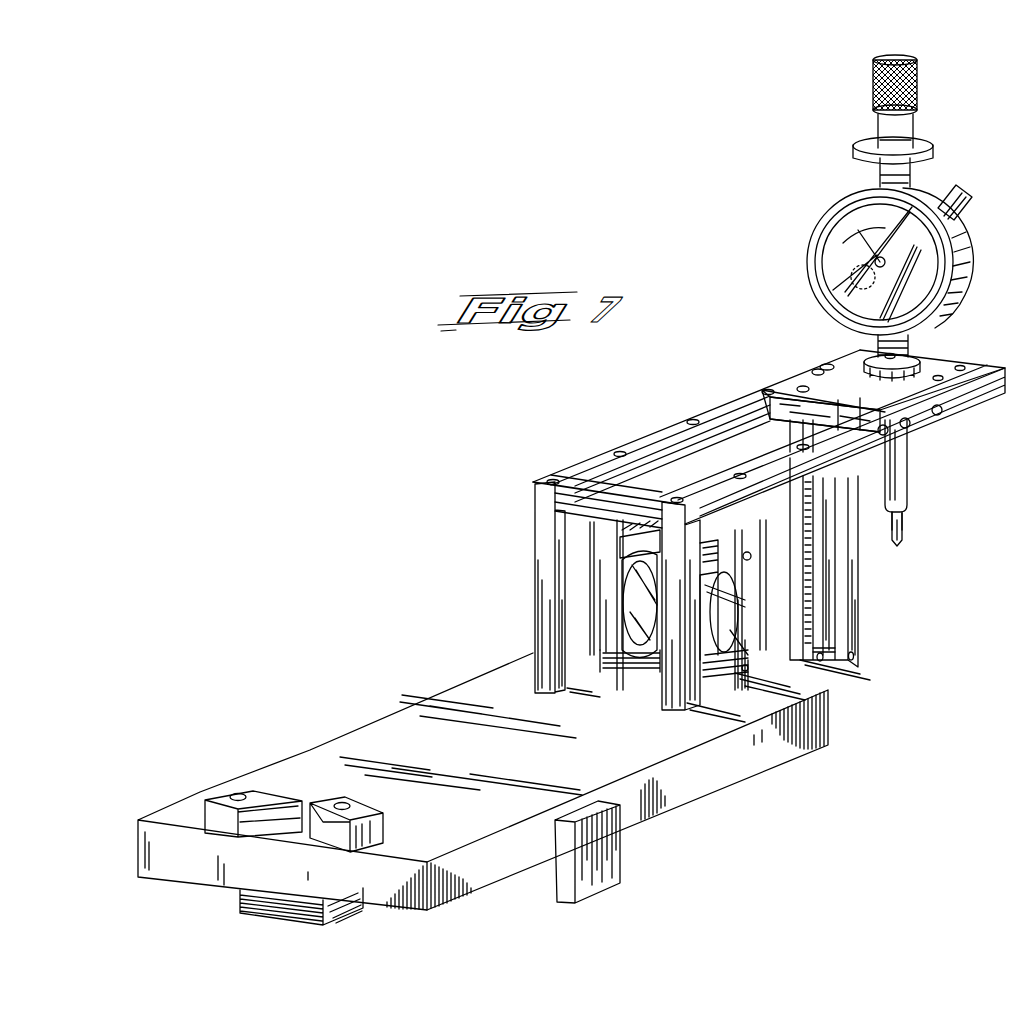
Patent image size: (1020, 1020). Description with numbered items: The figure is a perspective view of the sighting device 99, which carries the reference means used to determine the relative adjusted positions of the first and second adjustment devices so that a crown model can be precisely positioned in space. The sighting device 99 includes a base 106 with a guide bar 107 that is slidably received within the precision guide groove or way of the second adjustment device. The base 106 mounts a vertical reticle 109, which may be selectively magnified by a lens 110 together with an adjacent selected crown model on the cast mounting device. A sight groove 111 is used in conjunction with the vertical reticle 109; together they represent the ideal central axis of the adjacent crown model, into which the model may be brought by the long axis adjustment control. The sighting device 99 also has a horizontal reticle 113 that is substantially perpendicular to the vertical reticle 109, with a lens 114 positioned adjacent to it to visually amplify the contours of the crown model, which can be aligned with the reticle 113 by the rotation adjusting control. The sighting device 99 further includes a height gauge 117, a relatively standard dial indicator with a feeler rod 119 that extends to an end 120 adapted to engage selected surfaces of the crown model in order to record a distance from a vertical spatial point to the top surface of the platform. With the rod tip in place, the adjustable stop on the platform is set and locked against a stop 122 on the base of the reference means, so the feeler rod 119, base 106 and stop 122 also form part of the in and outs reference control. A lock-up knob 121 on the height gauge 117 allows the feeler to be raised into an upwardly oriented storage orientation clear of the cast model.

The sighting device 99 is at (729, 378).
The base 106 is at (688, 764).
The guide bar 107 is at (238, 903).
The vertical reticle 109 is at (832, 606).
The lens 110 is at (645, 593).
The sight groove 111 is at (300, 800).
The horizontal reticle 113 is at (817, 368).
The lens 114 is at (803, 385).
The height gauge 117 is at (963, 268).
The feeler rod 119 is at (904, 466).
The end 120 is at (905, 539).
The lock-up knob 121 is at (917, 86).
The stop 122 is at (612, 857).